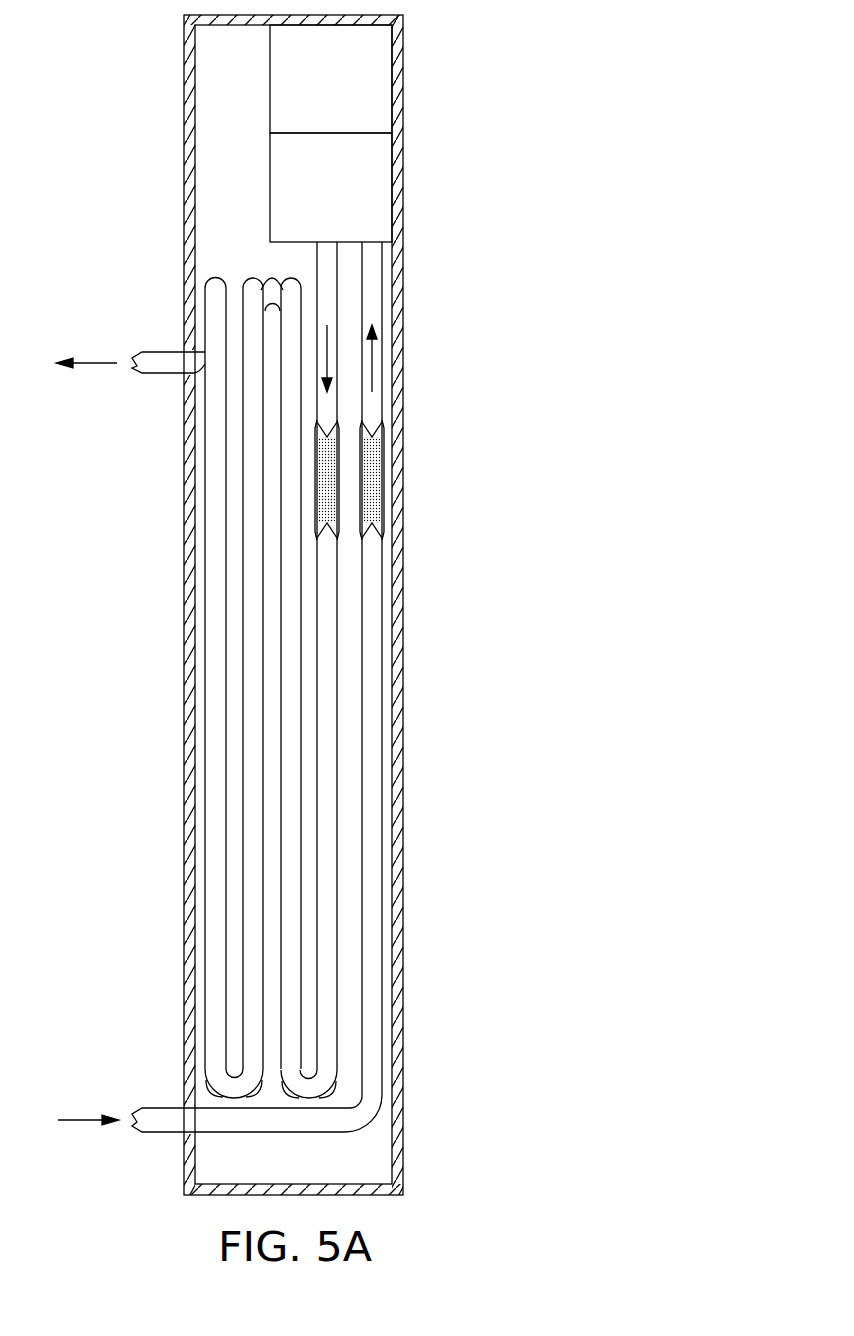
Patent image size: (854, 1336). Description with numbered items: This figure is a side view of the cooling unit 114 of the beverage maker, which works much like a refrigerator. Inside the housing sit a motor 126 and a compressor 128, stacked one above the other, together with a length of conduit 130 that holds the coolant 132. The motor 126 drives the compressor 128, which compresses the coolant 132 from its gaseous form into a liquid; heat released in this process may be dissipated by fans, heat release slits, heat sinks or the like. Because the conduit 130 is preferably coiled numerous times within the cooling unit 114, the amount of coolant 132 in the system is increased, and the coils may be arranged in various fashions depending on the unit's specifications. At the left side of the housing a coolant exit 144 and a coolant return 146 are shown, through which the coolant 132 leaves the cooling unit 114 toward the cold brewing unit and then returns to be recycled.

The cooling unit 114 is at (498, 25).
The motor 126 is at (310, 92).
The compressor 128 is at (310, 201).
The conduit 130 is at (385, 579).
The coolant 132 is at (372, 463).
The coolant exit 144 is at (147, 350).
The coolant return 146 is at (147, 1108).